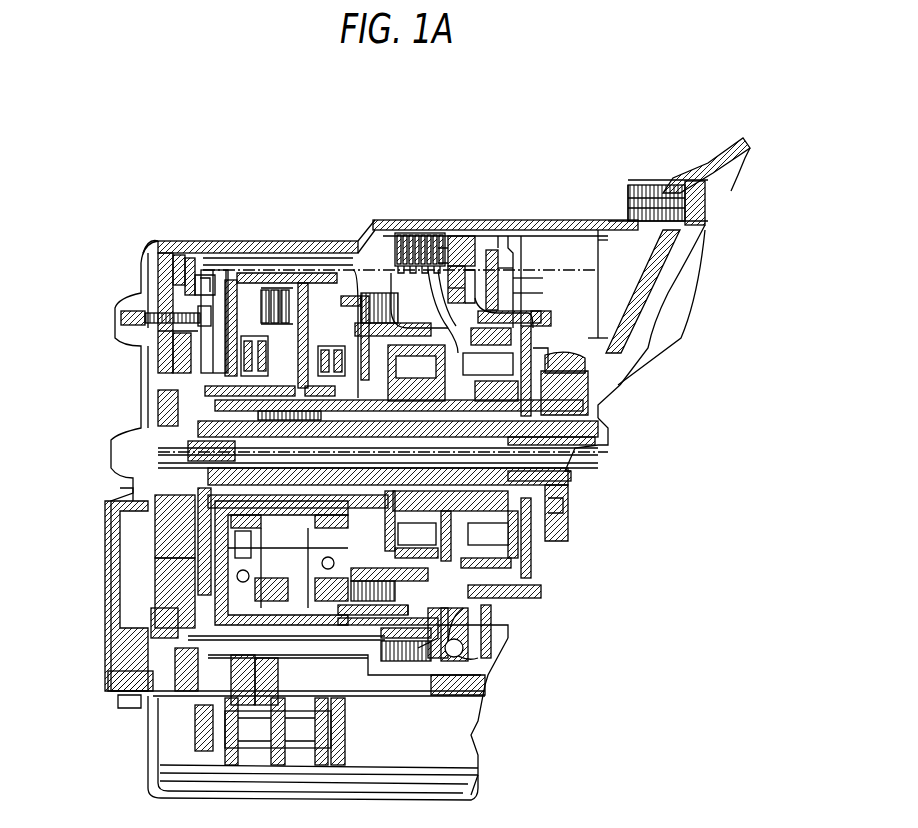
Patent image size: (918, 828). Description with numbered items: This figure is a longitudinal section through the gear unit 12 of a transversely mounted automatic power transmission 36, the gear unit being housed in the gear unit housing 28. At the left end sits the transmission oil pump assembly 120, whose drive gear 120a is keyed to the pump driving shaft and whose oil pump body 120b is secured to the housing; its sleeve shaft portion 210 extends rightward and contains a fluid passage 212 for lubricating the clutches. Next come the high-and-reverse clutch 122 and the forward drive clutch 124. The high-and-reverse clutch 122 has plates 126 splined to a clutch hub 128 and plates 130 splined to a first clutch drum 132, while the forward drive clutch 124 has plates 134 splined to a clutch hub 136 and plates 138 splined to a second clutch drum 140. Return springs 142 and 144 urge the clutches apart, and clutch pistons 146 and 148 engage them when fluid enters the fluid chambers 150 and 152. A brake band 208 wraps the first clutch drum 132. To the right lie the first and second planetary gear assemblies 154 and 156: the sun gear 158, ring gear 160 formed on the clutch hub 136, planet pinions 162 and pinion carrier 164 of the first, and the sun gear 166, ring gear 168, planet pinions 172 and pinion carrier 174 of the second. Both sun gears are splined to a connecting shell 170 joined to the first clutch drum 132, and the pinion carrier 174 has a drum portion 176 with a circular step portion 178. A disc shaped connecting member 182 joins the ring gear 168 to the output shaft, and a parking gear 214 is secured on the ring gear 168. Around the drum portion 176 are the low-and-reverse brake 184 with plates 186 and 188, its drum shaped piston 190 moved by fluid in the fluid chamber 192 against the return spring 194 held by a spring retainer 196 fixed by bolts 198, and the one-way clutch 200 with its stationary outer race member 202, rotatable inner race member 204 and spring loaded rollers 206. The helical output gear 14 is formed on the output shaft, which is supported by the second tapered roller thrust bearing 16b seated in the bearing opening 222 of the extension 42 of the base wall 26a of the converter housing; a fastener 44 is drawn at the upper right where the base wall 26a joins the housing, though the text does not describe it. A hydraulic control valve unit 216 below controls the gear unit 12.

The gear unit 12 is at (578, 245).
The helical output gear 14 is at (630, 360).
The second tapered roller thrust bearing 16b is at (581, 567).
The base wall of the converter housing 26a is at (690, 220).
The gear unit housing 28 is at (332, 233).
The automatic power transmission 36 is at (614, 165).
The extension of the base wall 42 is at (645, 330).
The bolt 44 is at (652, 195).
The transmission oil pump assembly 120 is at (165, 380).
The drive gear 120a is at (110, 450).
The oil pump body 120b is at (165, 355).
The high-and-reverse clutch 122 is at (208, 265).
The forward drive clutch 124 is at (390, 228).
The plates 126 is at (245, 285).
The clutch hub 128 is at (283, 268).
The plates 130 is at (228, 268).
The first clutch drum 132 is at (265, 290).
The plates 134 is at (422, 228).
The clutch hub 136 is at (483, 270).
The plates 138 is at (410, 270).
The second clutch drum 140 is at (358, 290).
The return spring 142 is at (150, 325).
The return spring 144 is at (318, 262).
The clutch piston 146 is at (195, 270).
The clutch piston 148 is at (306, 300).
The fluid chamber 150 is at (165, 400).
The fluid chamber 152 is at (300, 285).
The first planetary gear assembly 154 is at (584, 258).
The second planetary gear assembly 156 is at (543, 312).
The sun gear 158 is at (462, 485).
The ring gear 160 is at (500, 290).
The planet pinions 162 is at (412, 485).
The pinion carrier 164 is at (408, 337).
The sun gear 166 is at (460, 340).
The ring gear 168 is at (576, 363).
The connecting shell 170 is at (553, 283).
The planet pinions 172 is at (525, 340).
The pinion carrier 174 is at (590, 330).
The drum portion 176 is at (455, 228).
The circular step portion 178 is at (556, 222).
The connecting member 182 is at (660, 280).
The low-and-reverse brake 184 is at (449, 280).
The plates 186 is at (450, 265).
The plates 188 is at (435, 258).
The drum shaped piston 190 is at (347, 280).
The fluid chamber 192 is at (160, 240).
The return spring 194 is at (182, 262).
The spring retainer 196 is at (172, 248).
The bolts 198 is at (150, 305).
The transmission one-way clutch 200 is at (520, 255).
The stationary outer race member 202 is at (505, 240).
The rotatable inner race member 204 is at (530, 290).
The spring loaded rollers 206 is at (525, 275).
The brake band 208 is at (272, 250).
The sleeve shaft portion 210 is at (178, 418).
The fluid passage 212 is at (120, 470).
The parking gear 214 is at (510, 260).
The hydraulic control valve unit 216 is at (163, 745).
The bearing opening 222 is at (600, 350).